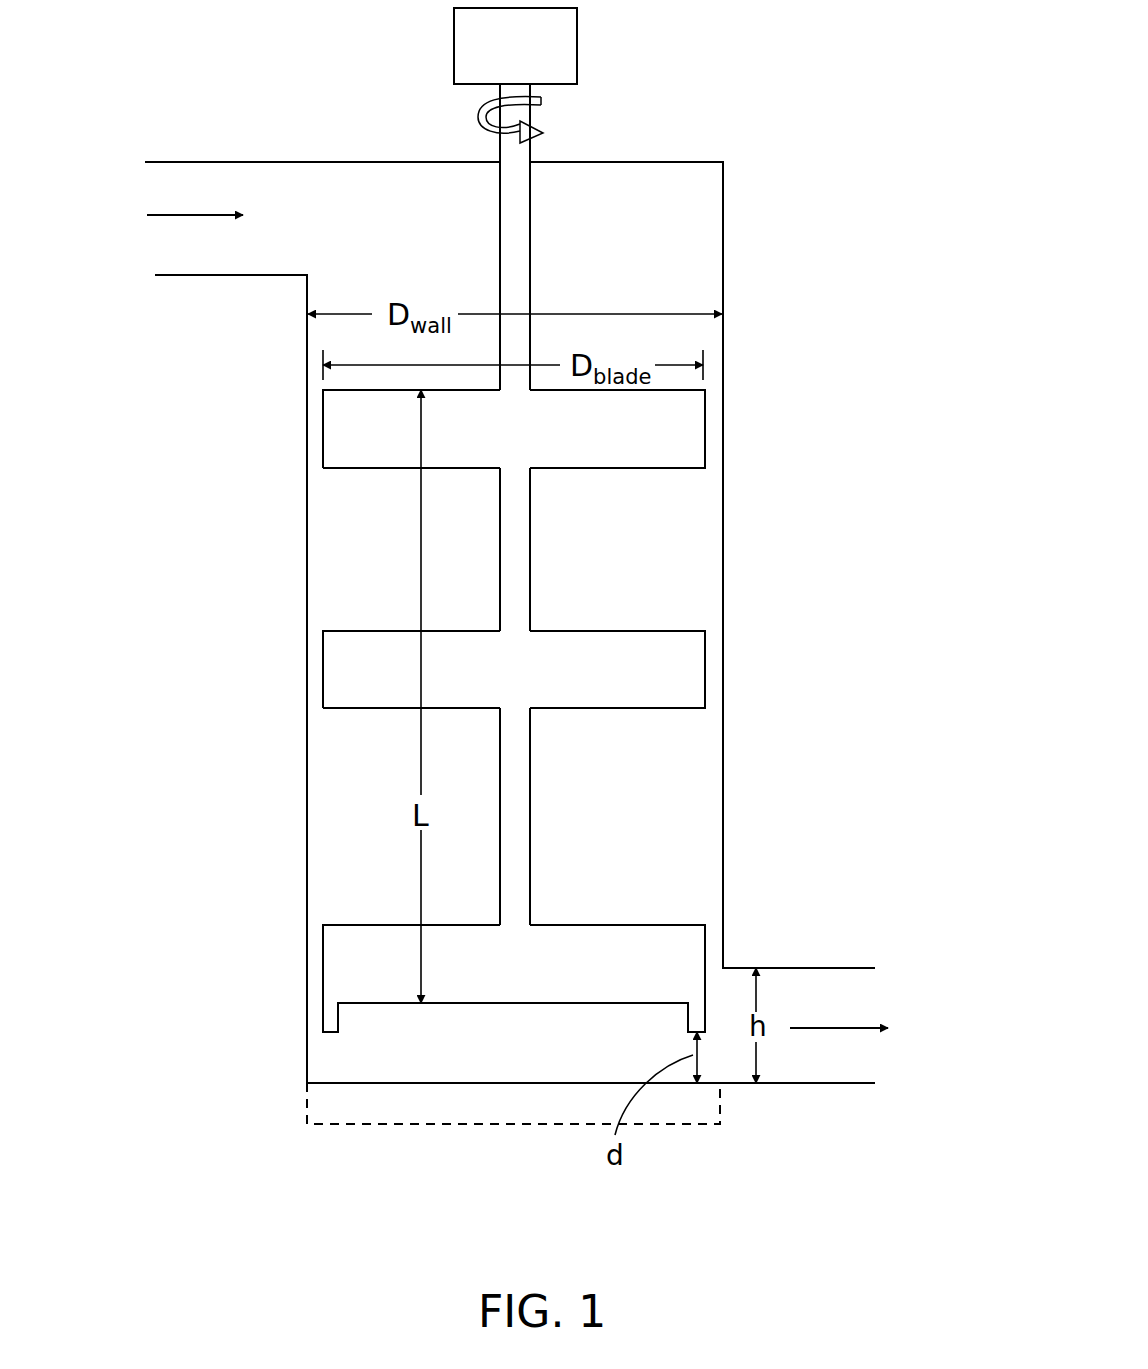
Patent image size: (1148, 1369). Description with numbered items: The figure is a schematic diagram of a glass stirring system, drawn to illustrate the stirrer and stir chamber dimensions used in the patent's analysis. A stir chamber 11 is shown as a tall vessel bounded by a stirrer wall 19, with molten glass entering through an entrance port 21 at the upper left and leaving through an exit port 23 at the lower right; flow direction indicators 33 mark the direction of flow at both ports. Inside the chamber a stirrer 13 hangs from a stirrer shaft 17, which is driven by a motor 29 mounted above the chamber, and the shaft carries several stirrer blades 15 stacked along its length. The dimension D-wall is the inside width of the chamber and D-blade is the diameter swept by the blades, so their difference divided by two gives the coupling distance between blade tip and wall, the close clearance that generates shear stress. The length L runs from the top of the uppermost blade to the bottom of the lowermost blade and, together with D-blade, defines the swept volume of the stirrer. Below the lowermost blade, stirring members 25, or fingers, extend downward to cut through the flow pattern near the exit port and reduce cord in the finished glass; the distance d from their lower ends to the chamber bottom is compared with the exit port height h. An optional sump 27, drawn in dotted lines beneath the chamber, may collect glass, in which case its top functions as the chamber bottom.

The stir chamber 11 is at (307, 773).
The stirrer 13 is at (514, 718).
The stirrer blade 15 is at (607, 644).
The stirrer shaft 17 is at (519, 240).
The stirrer wall 19 is at (722, 822).
The entrance port 21 is at (211, 257).
The exit port 23 is at (838, 1060).
The stirring member (finger) 25 is at (330, 1022).
The optional sump 27 is at (393, 1111).
The motor 29 is at (480, 38).
The flow direction indicators 33 is at (187, 215).